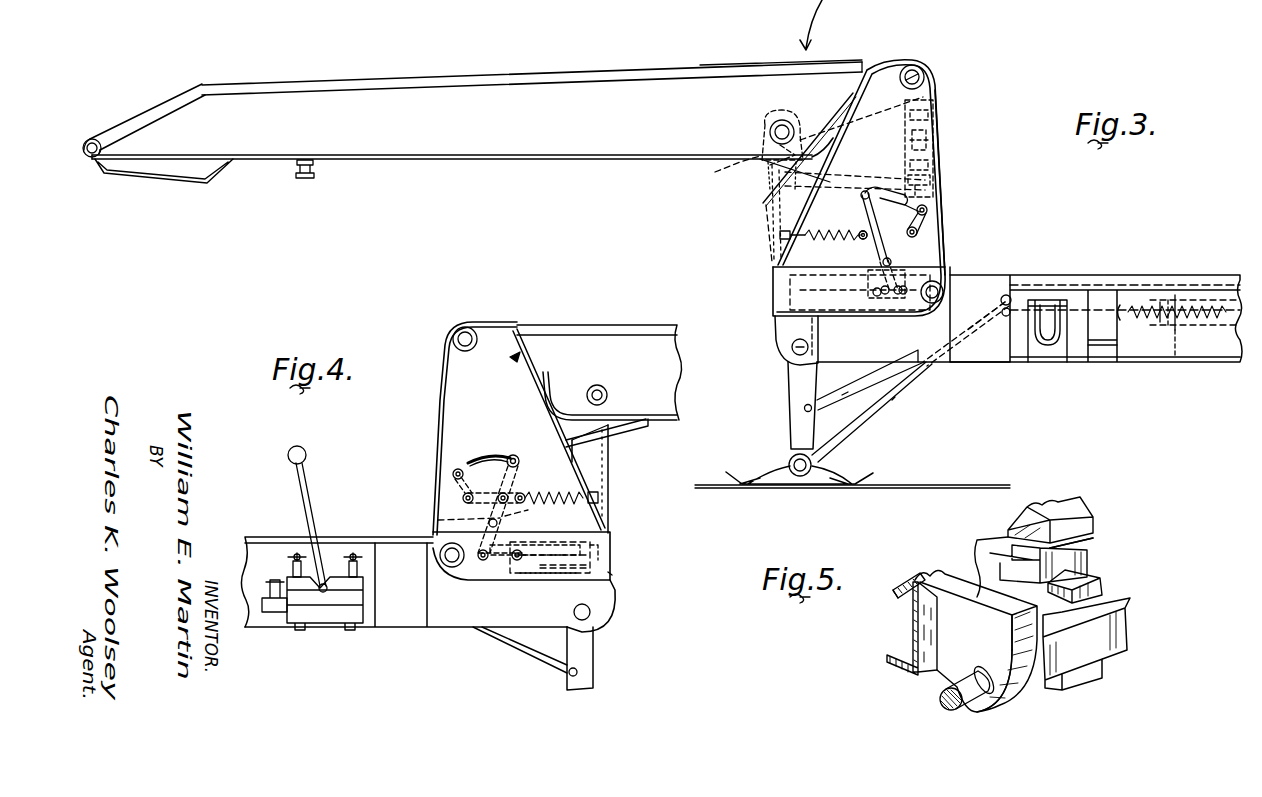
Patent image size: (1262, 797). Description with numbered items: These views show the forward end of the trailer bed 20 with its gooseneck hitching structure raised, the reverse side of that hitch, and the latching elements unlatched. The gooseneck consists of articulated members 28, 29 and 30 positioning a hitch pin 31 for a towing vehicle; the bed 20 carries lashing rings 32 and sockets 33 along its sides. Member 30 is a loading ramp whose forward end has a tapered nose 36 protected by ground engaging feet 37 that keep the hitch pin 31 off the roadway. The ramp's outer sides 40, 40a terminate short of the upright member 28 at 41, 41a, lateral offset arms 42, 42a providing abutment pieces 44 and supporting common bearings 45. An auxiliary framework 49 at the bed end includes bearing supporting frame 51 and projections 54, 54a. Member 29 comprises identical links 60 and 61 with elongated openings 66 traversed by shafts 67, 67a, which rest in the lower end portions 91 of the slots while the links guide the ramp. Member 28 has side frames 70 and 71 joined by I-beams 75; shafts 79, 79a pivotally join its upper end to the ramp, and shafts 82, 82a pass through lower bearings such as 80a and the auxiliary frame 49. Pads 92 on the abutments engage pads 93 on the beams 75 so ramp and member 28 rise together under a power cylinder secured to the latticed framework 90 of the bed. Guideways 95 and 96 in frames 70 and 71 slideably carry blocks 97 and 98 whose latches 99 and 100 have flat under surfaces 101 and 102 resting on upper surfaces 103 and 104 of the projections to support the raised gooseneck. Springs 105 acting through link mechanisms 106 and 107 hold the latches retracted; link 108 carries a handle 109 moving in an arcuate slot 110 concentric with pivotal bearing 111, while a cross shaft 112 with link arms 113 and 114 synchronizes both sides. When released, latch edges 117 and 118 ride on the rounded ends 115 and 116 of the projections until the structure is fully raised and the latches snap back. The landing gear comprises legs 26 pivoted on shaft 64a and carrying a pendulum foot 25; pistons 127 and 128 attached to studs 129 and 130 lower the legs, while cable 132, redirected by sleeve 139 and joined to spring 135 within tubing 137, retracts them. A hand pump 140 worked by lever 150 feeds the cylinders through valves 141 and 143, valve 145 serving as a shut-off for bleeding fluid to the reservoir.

In FIG. 3, the bed 20 is at (1125, 275).
In FIG. 4, the bed 20 is at (340, 528).
In FIG. 3, the foot 25 is at (820, 487).
In FIG. 3, the legs 26 is at (790, 400).
In FIG. 4, the legs 26 is at (600, 652).
In FIG. 3, the upright member 28 is at (957, 172).
In FIG. 3, the articulated members 29 is at (765, 205).
In FIG. 4, the articulated members 29 is at (612, 468).
In FIG. 3, the ramp member 30 is at (480, 80).
In FIG. 3, the hitch pin 31 is at (305, 180).
In FIG. 3, the lashing rings 32 is at (1050, 348).
In FIG. 3, the sockets 33 is at (1110, 345).
In FIG. 3, the tapered nose 36 is at (140, 120).
In FIG. 3, the ground engaging feet 37 is at (178, 182).
In FIG. 4, the outer side of ramp 40 is at (615, 335).
In FIG. 3, the outer side of ramp 40a is at (756, 82).
In FIG. 4, the termination of ramp side 41 is at (520, 340).
In FIG. 3, the termination of ramp side 41a is at (848, 80).
In FIG. 4, the lateral offset arm 42 is at (600, 428).
In FIG. 3, the lateral offset arm 42a is at (776, 235).
In FIG. 4, the abutment piece 44 is at (572, 450).
In FIG. 3, the common bearings 45 is at (768, 126).
In FIG. 3, the auxiliary framework 49 is at (978, 362).
In FIG. 4, the auxiliary framework 49 is at (405, 630).
In FIG. 5, the bearing supporting frame 51 is at (915, 585).
In FIG. 4, the projection 54 is at (598, 598).
In FIG. 5, the projection 54 is at (920, 642).
In FIG. 3, the projection 54a is at (830, 365).
In FIG. 4, the link 60 is at (612, 450).
In FIG. 3, the link 61 is at (765, 228).
In FIG. 3, the shaft 64a is at (792, 348).
In FIG. 3, the elongated opening 66 is at (715, 172).
In FIG. 4, the shaft 67 is at (597, 385).
In FIG. 3, the shaft 67a is at (796, 128).
In FIG. 4, the side frame 70 is at (480, 420).
In FIG. 3, the side frame 71 is at (858, 164).
In FIG. 5, the side frame 71 is at (1080, 510).
In FIG. 3, the I-beams 75 is at (935, 118).
In FIG. 4, the shaft 79 is at (460, 325).
In FIG. 3, the shaft 79a is at (928, 70).
In FIG. 3, the lower bearing 80a is at (948, 285).
In FIG. 4, the shaft 82 is at (450, 570).
In FIG. 3, the shaft 82a is at (1005, 285).
In FIG. 3, the latticed framework structure 90 is at (1195, 282).
In FIG. 3, the lower end portions of slots 91 is at (752, 168).
In FIG. 3, the pads 92 is at (938, 183).
In FIG. 3, the pads 93 is at (938, 143).
In FIG. 4, the guideway 95 is at (598, 524).
In FIG. 3, the guideway 96 is at (820, 259).
In FIG. 5, the guideway 96 is at (1070, 562).
In FIG. 4, the slide block 97 is at (600, 580).
In FIG. 3, the slide block 98 is at (858, 308).
In FIG. 5, the slide block 98 is at (1098, 590).
In FIG. 4, the latch 99 is at (600, 553).
In FIG. 5, the latch 100 is at (1120, 640).
In FIG. 4, the flat under surface 101 is at (600, 570).
In FIG. 5, the flat under surface 102 is at (1038, 688).
In FIG. 4, the upper surface 103 is at (526, 582).
In FIG. 4, the upper surface 104 is at (598, 490).
In FIG. 5, the upper surface 104 is at (962, 578).
In FIG. 3, the springs 105 is at (825, 236).
In FIG. 4, the link mechanism 106 is at (510, 521).
In FIG. 3, the link mechanism 107 is at (872, 256).
In FIG. 4, the link arm 108 is at (492, 456).
In FIG. 4, the projecting handle 109 is at (516, 455).
In FIG. 4, the arcuate slot 110 is at (470, 462).
In FIG. 4, the pivotal bearing 111 is at (488, 520).
In FIG. 3, the cross shaft 112 is at (932, 210).
In FIG. 4, the cross shaft 112 is at (453, 470).
In FIG. 4, the connecting link arm 113 is at (462, 484).
In FIG. 3, the connecting link arm 114 is at (922, 232).
In FIG. 4, the rounded forward end portion 115 is at (612, 582).
In FIG. 3, the rounded forward end portion 116 is at (775, 330).
In FIG. 5, the rounded forward end portion 116 is at (1008, 632).
In FIG. 4, the latch edge 117 is at (600, 562).
In FIG. 5, the latch edge 118 is at (1008, 668).
In FIG. 4, the piston 127 is at (510, 648).
In FIG. 3, the piston 128 is at (842, 395).
In FIG. 4, the pivot stud 129 is at (580, 672).
In FIG. 3, the pivot stud 130 is at (803, 410).
In FIG. 3, the cable 132 is at (892, 400).
In FIG. 3, the spring 135 is at (1145, 300).
In FIG. 3, the protective tubing 137 is at (1222, 330).
In FIG. 3, the sleeve member 139 is at (1045, 275).
In FIG. 4, the hand manipulated power pump 140 is at (328, 625).
In FIG. 4, the valve 141 is at (296, 548).
In FIG. 4, the valve 143 is at (358, 548).
In FIG. 4, the valve unit 145 is at (278, 615).
In FIG. 4, the pump lever 150 is at (300, 498).